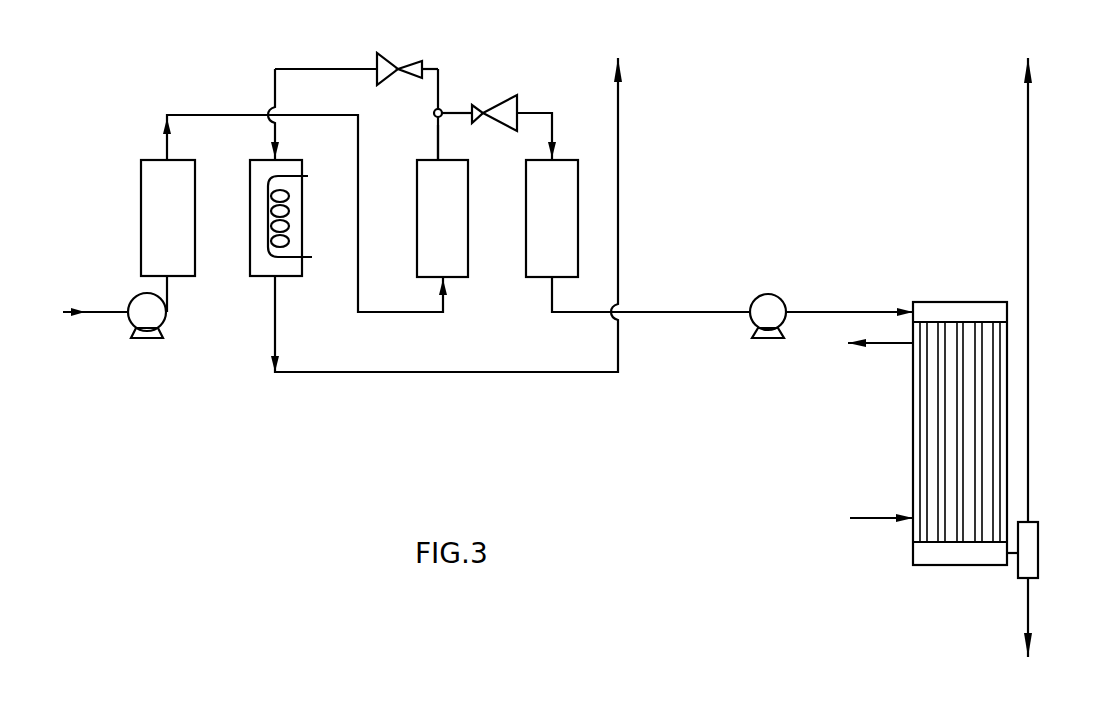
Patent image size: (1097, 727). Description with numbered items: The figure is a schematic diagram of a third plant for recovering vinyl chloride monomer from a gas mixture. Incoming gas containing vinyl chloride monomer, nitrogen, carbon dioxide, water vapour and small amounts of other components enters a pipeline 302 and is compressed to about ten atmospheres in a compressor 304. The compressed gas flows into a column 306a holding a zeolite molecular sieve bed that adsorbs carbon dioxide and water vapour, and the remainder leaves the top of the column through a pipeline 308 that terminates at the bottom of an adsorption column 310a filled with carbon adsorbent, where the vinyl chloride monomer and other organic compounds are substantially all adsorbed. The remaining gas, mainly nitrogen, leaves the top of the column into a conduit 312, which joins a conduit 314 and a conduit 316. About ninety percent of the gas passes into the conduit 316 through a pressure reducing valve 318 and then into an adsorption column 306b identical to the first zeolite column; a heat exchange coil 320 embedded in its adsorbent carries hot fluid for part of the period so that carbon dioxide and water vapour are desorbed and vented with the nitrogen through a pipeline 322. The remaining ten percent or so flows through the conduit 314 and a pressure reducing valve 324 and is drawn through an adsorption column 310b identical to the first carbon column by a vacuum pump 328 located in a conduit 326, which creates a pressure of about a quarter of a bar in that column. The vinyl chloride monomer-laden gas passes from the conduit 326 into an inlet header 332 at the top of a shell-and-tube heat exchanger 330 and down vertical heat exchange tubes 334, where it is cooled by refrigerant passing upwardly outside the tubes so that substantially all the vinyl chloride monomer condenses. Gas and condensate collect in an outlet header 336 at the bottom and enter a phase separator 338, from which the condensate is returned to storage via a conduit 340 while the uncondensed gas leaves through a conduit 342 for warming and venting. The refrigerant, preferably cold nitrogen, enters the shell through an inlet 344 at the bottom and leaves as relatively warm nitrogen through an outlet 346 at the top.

The pipeline 302 is at (100, 312).
The compressor 304 is at (157, 313).
The column 306a is at (157, 229).
The adsorption column 306b is at (266, 170).
The pipeline 308 is at (216, 113).
The adsorption column 310a is at (435, 177).
The adsorption column 310b is at (542, 263).
The conduit 312 is at (441, 142).
The conduit 314 is at (456, 110).
The conduit 316 is at (435, 64).
The pressure reducing valve 318 is at (392, 57).
The heat exchange coil 320 is at (306, 256).
The pipeline 322 is at (422, 372).
The pressure reducing valve 324 is at (510, 96).
The conduit 326 is at (573, 315).
The vacuum pump 328 is at (750, 318).
The shell-and-tube heat exchanger 330 is at (1007, 375).
The inlet header 332 is at (960, 306).
The heat exchange tubes 334 is at (997, 447).
The outlet header 336 is at (955, 565).
The phase separator 338 is at (1039, 538).
The conduit 340 is at (1028, 605).
The conduit 342 is at (1028, 176).
The inlet 344 is at (872, 520).
The outlet 346 is at (878, 343).